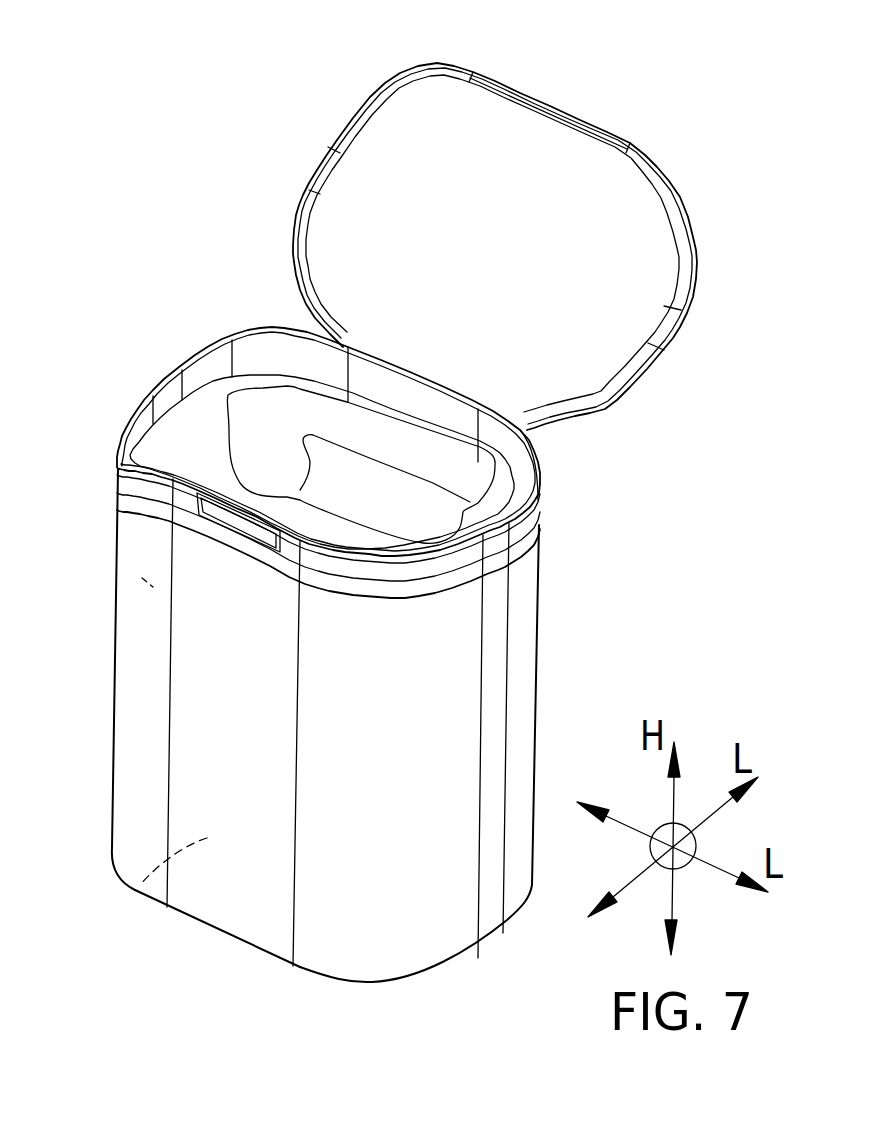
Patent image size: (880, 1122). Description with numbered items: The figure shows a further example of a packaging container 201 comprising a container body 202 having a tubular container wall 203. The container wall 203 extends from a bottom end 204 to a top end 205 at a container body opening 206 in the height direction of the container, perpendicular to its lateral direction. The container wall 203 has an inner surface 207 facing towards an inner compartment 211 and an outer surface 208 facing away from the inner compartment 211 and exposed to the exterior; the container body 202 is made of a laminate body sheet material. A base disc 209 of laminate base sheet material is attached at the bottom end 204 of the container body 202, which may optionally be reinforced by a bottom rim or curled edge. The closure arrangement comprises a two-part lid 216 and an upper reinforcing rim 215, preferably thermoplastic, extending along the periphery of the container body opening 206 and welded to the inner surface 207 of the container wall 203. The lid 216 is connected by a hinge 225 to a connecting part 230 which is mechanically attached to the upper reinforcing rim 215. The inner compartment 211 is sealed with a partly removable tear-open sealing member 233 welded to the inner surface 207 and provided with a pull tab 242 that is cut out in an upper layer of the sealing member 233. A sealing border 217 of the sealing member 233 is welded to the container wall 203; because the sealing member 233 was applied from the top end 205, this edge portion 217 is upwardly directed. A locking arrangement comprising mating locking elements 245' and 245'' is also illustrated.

The packaging container 201 is at (196, 110).
The container body 202 is at (574, 671).
The tubular container wall 203 is at (435, 862).
The bottom end 204 is at (218, 953).
The top end 205 is at (543, 488).
The container body opening 206 is at (186, 441).
The inner surface 207 is at (133, 572).
The outer surface 208 is at (213, 620).
The base disc 209 is at (367, 982).
The inner compartment 211 is at (137, 892).
The upper reinforcing rim 215 is at (137, 400).
The lid 216 is at (515, 150).
The sealing border 217 is at (237, 387).
The hinge 225 is at (423, 370).
The connecting part 230 is at (462, 573).
The tear-open sealing member 233 is at (382, 517).
The pull tab 242 is at (268, 470).
The locking element 245' is at (151, 522).
The locking element 245'' is at (549, 76).